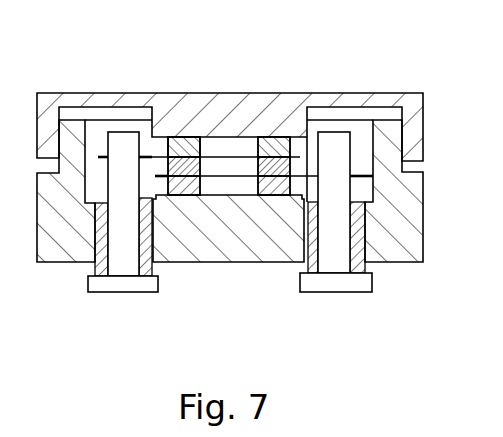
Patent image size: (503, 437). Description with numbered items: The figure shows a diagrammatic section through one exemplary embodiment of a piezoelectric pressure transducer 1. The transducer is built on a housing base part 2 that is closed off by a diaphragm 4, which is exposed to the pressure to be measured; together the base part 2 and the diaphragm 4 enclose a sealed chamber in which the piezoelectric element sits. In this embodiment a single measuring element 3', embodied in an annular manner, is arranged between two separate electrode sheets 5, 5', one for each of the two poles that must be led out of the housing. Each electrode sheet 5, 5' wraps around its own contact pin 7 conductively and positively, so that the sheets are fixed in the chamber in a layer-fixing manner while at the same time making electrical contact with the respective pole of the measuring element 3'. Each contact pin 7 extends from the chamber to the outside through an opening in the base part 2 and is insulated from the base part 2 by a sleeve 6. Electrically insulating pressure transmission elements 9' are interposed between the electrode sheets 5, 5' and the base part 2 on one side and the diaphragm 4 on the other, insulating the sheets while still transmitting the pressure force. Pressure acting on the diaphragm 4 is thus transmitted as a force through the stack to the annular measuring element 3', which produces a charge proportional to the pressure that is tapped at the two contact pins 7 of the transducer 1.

The piezoelectric pressure transducer 1 is at (442, 64).
The housing base part 2 is at (208, 230).
The annular measuring element 3' is at (188, 102).
The diaphragm 4 is at (92, 97).
The electrode sheet 5 is at (278, 231).
The second electrode sheet 5' is at (172, 83).
The sleeve 6 is at (95, 245).
The contact pin 7 is at (108, 286).
The electrically insulating pressure transmission element 9' is at (235, 168).